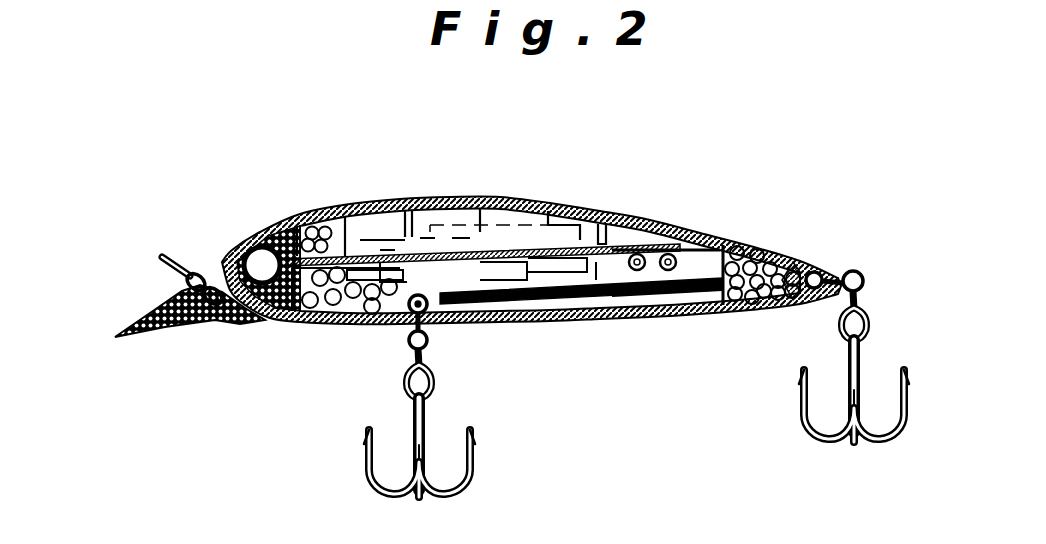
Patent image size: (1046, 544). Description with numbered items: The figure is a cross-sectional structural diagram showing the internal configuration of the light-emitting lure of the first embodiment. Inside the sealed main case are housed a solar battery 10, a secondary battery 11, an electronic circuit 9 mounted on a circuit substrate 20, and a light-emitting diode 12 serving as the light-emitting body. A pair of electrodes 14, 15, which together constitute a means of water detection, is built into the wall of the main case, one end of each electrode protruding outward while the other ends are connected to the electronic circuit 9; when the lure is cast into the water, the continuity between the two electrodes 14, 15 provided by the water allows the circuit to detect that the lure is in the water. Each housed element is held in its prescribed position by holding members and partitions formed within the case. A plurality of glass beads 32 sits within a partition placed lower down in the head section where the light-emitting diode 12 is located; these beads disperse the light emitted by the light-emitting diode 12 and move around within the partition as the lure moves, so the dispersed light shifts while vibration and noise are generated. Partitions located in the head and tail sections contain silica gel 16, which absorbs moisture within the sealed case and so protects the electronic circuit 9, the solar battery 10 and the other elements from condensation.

The electronic circuit 9 is at (503, 235).
The solar battery 10 is at (632, 283).
The secondary battery 11 is at (546, 298).
The light-emitting diode 12 is at (285, 320).
The electrode 14 is at (686, 243).
The electrode 15 is at (641, 254).
The silica gel 16 is at (306, 214).
The circuit substrate 20 is at (436, 247).
The glass beads 32 is at (360, 324).